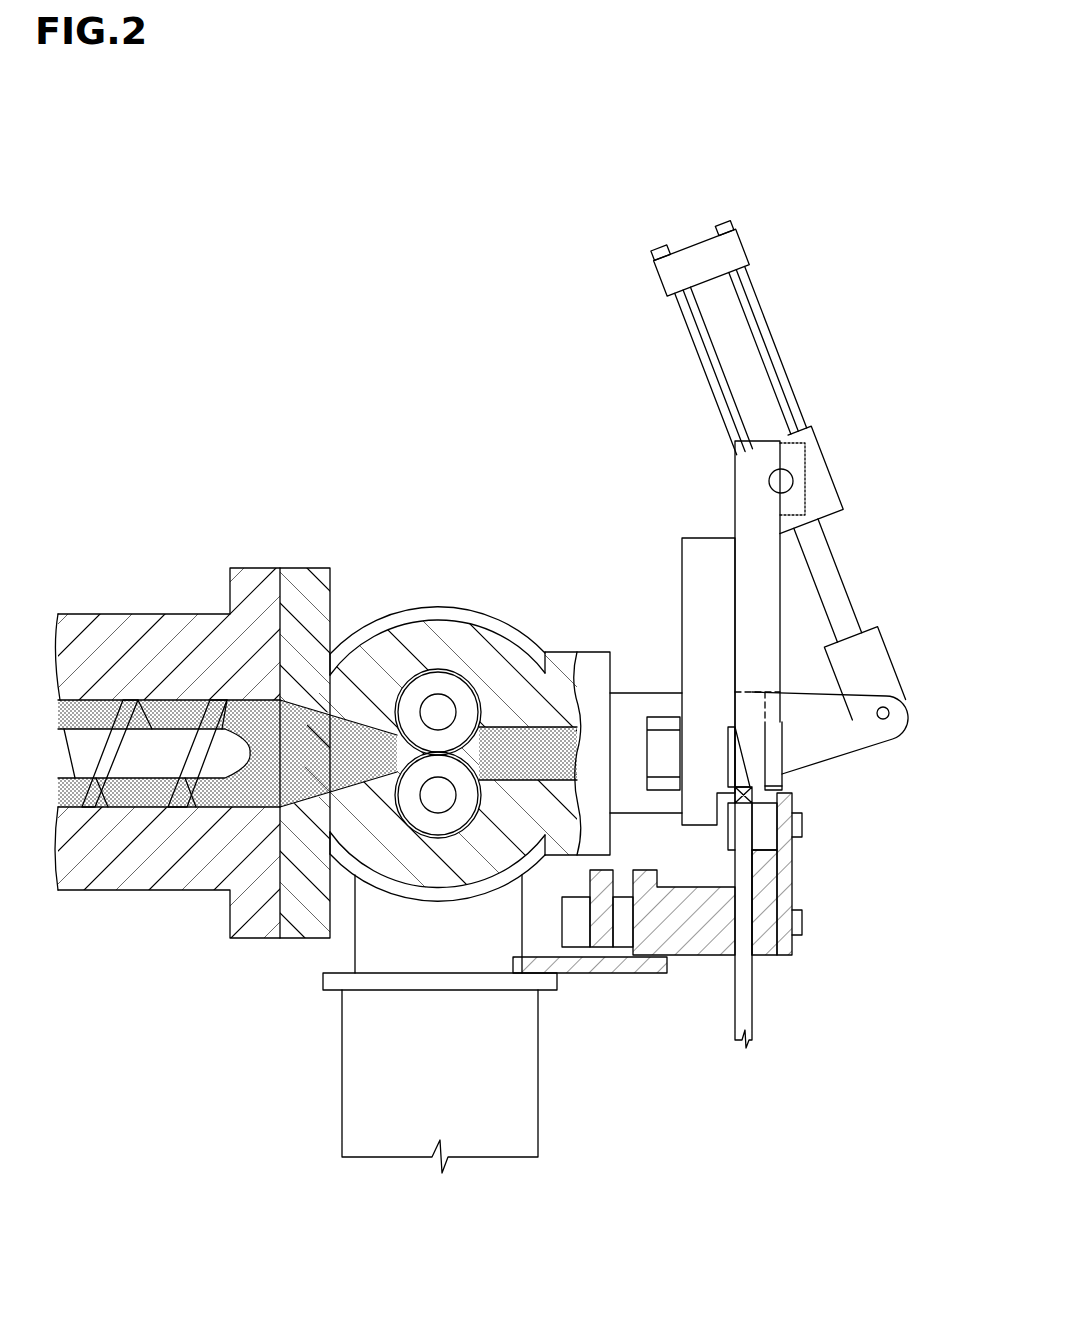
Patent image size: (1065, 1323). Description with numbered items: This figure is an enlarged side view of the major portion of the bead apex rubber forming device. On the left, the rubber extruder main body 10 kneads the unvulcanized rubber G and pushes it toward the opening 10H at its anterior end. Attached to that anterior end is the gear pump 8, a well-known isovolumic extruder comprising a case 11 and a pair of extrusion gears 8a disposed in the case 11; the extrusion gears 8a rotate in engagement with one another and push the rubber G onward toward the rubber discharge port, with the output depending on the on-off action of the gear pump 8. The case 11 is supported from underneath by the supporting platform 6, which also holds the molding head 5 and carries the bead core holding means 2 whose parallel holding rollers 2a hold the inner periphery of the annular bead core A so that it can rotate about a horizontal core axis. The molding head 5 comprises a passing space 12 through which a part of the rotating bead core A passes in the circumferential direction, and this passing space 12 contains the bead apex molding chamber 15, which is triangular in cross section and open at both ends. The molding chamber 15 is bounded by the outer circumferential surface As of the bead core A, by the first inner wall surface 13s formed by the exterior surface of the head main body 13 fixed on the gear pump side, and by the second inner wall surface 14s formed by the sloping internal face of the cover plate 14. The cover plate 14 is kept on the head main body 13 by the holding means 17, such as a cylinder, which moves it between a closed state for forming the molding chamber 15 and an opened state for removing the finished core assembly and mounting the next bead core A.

The rubber extruder main body 10 is at (115, 647).
The unvulcanized rubber G is at (297, 730).
The opening 10H is at (300, 838).
The case 11 is at (388, 655).
The gear pump 8 is at (500, 604).
The extrusion gears 8a is at (433, 688).
The supporting platform 6 is at (538, 1073).
The molding head 5 is at (635, 479).
The head main body 13 is at (708, 538).
The first inner wall surface 13s is at (767, 788).
The holding means 17 is at (825, 459).
The cover plate 14 is at (767, 753).
The second inner wall surface 14s is at (733, 786).
The bead core A is at (747, 982).
The outer circumferential surface As is at (733, 788).
The bead core holding means 2 is at (793, 880).
The holding rollers 2a is at (765, 835).
The passing space 12 is at (857, 843).
The bead apex molding chamber 15 is at (789, 874).